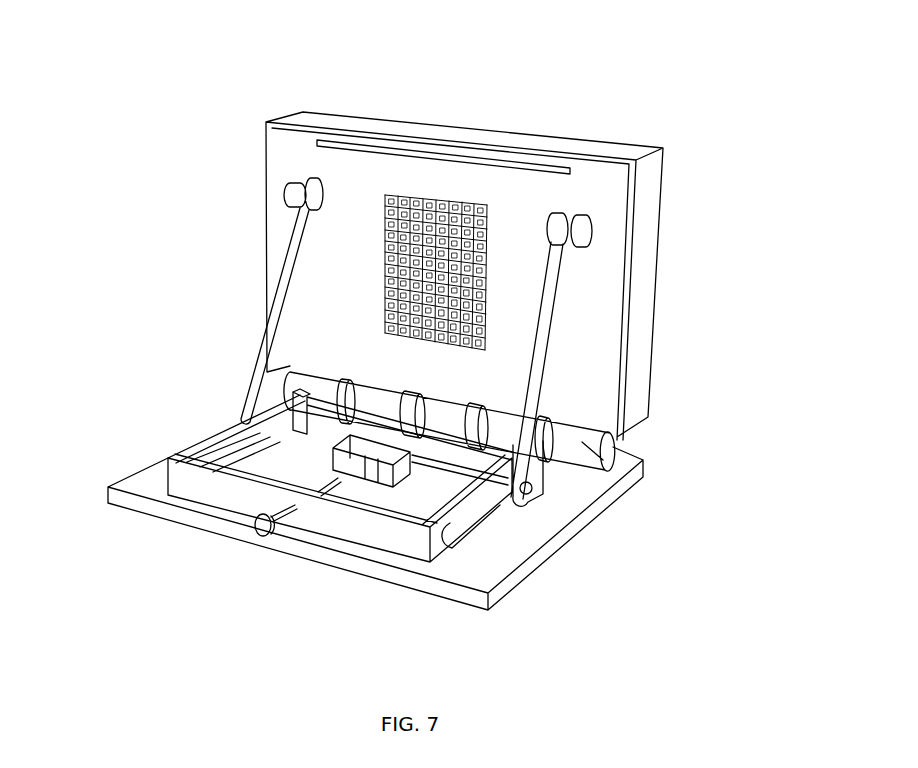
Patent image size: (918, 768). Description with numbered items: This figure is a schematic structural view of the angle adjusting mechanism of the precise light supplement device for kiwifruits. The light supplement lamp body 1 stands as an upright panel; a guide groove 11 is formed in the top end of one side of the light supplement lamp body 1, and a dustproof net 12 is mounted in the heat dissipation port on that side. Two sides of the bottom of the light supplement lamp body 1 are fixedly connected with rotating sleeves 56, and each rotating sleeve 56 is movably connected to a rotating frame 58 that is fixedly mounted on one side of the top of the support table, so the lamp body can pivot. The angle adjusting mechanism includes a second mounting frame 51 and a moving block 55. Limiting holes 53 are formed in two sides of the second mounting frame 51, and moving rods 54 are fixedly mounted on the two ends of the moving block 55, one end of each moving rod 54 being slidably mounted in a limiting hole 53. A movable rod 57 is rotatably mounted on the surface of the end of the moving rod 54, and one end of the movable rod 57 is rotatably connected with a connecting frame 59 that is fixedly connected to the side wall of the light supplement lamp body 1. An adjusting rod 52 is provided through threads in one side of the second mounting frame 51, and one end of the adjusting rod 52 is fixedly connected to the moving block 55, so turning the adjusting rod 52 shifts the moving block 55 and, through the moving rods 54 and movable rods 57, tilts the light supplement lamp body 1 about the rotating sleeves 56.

The light supplement lamp body 1 is at (596, 185).
The guide groove 11 is at (430, 157).
The dustproof net 12 is at (473, 205).
The second mounting frame 51 is at (219, 488).
The adjusting rod 52 is at (263, 530).
The limiting hole 53 is at (452, 535).
The moving rod 54 is at (462, 480).
The moving block 55 is at (342, 440).
The rotating sleeve 56 is at (380, 398).
The movable rod 57 is at (544, 367).
The rotating frame 58 is at (613, 470).
The connecting frame 59 is at (588, 232).